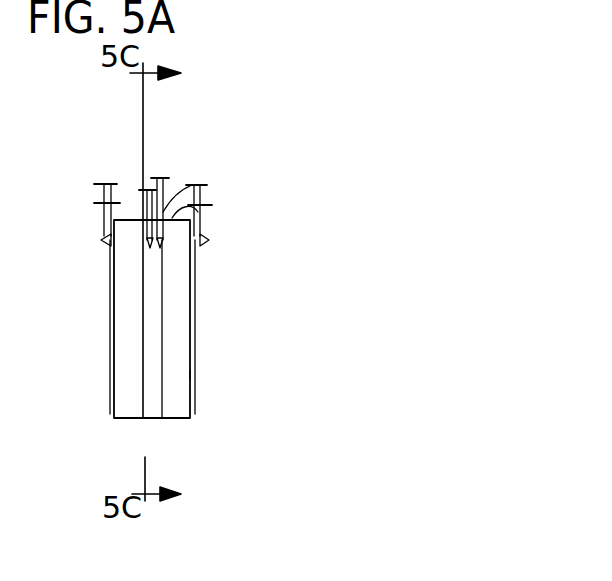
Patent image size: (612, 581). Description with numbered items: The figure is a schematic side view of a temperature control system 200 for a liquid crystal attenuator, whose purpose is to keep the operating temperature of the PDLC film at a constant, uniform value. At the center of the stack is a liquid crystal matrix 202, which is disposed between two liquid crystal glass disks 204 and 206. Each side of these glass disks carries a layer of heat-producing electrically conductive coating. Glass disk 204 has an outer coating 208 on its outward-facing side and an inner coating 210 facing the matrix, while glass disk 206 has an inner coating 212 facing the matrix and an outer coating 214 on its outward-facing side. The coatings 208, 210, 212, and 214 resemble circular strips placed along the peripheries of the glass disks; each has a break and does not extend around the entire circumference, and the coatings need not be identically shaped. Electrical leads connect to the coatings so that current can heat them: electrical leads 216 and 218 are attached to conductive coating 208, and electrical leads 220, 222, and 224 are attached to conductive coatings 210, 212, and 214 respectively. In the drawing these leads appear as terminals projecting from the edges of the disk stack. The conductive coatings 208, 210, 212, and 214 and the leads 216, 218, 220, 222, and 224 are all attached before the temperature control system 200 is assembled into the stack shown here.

The temperature control system 200 is at (203, 154).
The liquid crystal matrix 202 is at (150, 420).
The liquid crystal glass disk 204 is at (139, 190).
The liquid crystal glass disk 206 is at (198, 212).
The outer coating 208 is at (110, 293).
The inner coating 210 is at (142, 420).
The inner coating 212 is at (160, 420).
The outer coating 214 is at (197, 375).
The electrical lead 216 is at (95, 204).
The electrical lead 218 is at (104, 193).
The electrical lead 220 is at (168, 178).
The electrical lead 222 is at (205, 185).
The electrical lead 224 is at (205, 205).